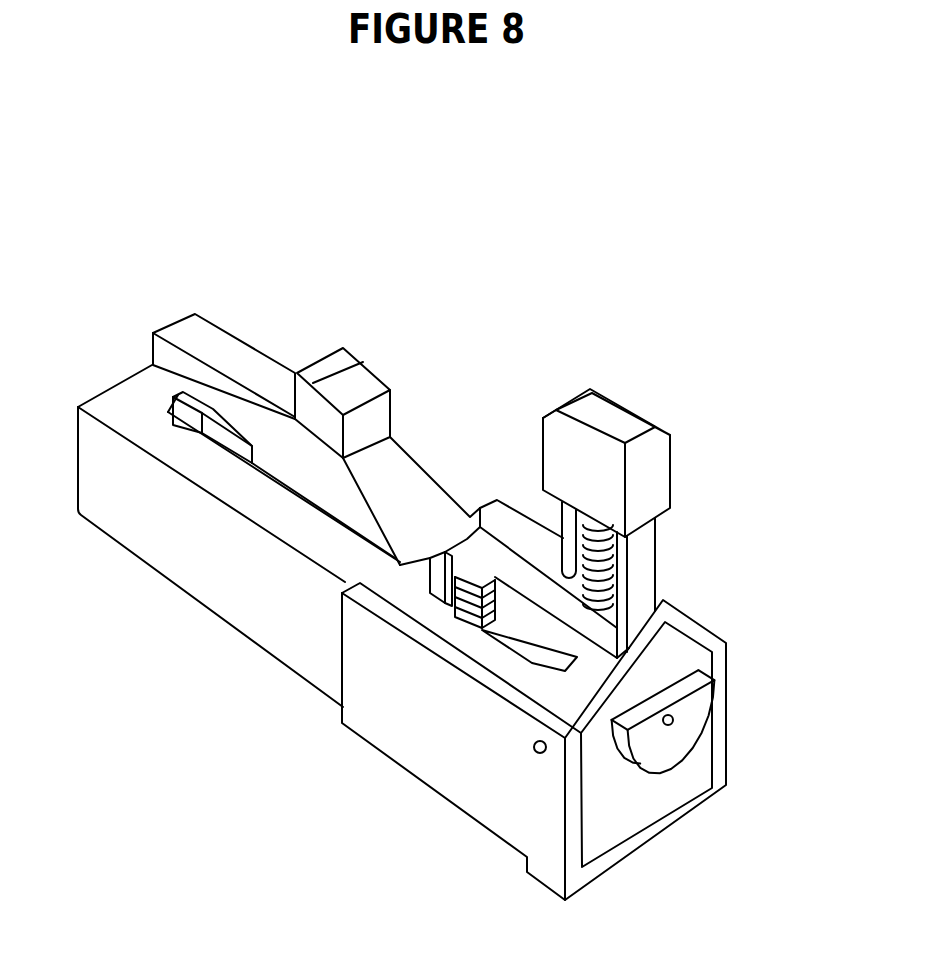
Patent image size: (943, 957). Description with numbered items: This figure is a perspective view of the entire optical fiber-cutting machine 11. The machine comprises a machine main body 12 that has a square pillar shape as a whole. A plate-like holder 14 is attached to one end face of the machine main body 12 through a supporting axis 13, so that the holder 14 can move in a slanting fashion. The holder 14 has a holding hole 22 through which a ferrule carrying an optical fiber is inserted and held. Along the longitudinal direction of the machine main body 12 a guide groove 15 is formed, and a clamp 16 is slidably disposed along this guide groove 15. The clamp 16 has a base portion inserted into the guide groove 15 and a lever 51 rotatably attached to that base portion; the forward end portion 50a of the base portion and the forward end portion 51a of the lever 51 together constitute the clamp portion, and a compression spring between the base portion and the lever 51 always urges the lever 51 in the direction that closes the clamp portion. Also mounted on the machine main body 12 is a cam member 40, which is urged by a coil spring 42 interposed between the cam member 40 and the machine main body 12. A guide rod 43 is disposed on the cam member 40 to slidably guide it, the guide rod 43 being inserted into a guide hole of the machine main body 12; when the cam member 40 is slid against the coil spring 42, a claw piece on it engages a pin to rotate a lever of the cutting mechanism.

The optical fiber-cutting machine 11 is at (394, 234).
The machine main body 12 is at (310, 658).
The supporting axis 13 is at (537, 753).
The holder 14 is at (659, 790).
The guide groove 15 is at (290, 495).
The clamp 16 is at (400, 478).
The holding hole 22 is at (674, 721).
The cam member 40 is at (667, 537).
The coil spring 42 is at (600, 527).
The guide rod 43 is at (561, 532).
The lever 51 is at (239, 364).
The forward end portion of the lever 51a is at (467, 600).
The forward end portion of the base portion 50a is at (482, 620).